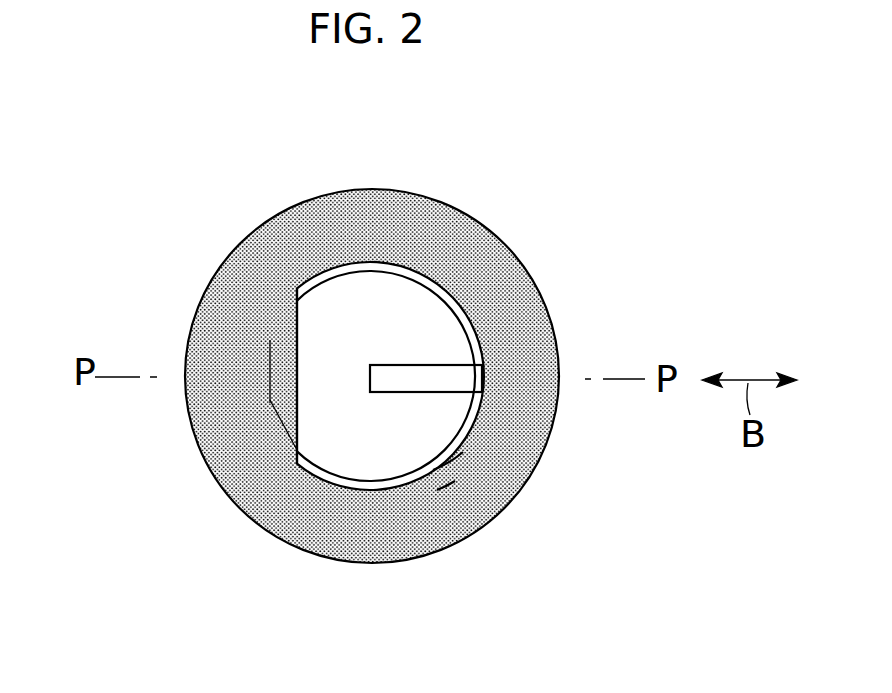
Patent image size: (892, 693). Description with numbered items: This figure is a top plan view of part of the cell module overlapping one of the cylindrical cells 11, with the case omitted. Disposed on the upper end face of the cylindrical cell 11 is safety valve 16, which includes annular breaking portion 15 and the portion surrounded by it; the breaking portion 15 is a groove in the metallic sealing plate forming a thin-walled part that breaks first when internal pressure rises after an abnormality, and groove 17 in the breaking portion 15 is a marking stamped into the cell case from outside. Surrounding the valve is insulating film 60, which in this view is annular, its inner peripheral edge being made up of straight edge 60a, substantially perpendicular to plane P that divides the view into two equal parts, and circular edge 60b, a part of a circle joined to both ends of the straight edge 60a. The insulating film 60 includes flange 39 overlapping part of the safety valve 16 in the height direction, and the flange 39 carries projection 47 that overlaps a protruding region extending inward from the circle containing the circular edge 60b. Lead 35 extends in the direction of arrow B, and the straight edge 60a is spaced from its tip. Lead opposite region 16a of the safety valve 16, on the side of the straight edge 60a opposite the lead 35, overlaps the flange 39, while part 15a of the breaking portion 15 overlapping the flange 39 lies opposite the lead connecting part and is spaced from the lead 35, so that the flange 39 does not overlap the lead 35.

The insulating film 60 is at (273, 257).
The straight edge 60a is at (303, 357).
The circular edge 60b is at (440, 305).
The lead 35 is at (393, 379).
The safety valve 16 is at (420, 415).
The groove 17 is at (433, 470).
The annular breaking portion 15 is at (437, 473).
The lead opposite region 16a is at (290, 346).
The part of breaking portion 15a is at (273, 377).
The projection 47 is at (270, 400).
The flange 39 is at (276, 410).
The cylindrical cell 11 is at (377, 450).